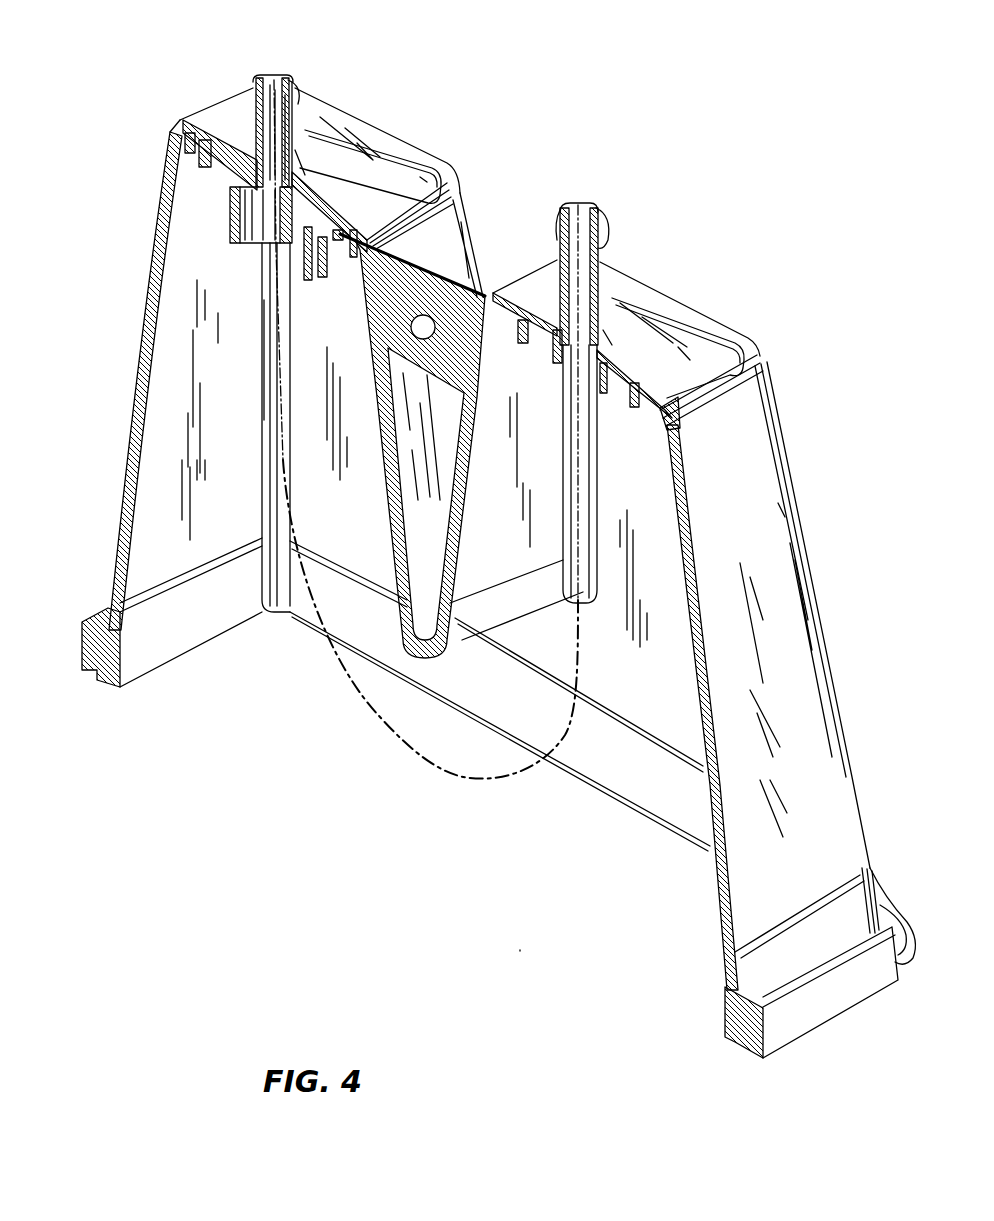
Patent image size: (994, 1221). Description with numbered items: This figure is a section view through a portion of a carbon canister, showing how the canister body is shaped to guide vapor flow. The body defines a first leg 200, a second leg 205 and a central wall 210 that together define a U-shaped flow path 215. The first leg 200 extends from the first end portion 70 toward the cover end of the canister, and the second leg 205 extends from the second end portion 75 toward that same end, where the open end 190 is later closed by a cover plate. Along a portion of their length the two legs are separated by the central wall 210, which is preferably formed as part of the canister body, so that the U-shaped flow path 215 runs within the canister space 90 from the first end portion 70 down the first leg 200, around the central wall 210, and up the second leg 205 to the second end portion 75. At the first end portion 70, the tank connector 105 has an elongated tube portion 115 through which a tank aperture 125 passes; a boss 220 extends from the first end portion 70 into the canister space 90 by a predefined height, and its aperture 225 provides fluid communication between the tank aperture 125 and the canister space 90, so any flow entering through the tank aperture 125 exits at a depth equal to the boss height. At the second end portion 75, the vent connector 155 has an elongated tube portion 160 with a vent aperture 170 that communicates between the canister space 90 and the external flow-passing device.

The first end portion 70 is at (235, 115).
The second end portion 75 is at (650, 303).
The canister space 90 is at (650, 1025).
The tank connector 105 is at (297, 167).
The tube portion 115 is at (293, 137).
The tank aperture 125 is at (272, 75).
The vent connector 155 is at (607, 340).
The tube portion 160 is at (603, 297).
The vent aperture 170 is at (583, 203).
The open end 190 is at (523, 945).
The first leg 200 is at (167, 357).
The second leg 205 is at (662, 553).
The central wall 210 is at (405, 633).
The U-shaped flow path 215 is at (470, 785).
The boss 220 is at (228, 205).
The aperture 225 is at (258, 256).